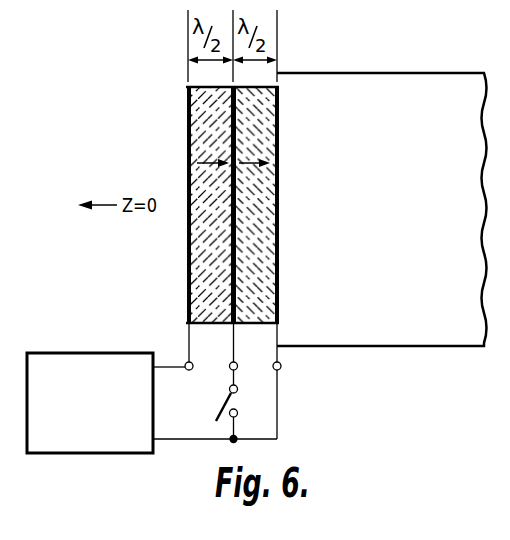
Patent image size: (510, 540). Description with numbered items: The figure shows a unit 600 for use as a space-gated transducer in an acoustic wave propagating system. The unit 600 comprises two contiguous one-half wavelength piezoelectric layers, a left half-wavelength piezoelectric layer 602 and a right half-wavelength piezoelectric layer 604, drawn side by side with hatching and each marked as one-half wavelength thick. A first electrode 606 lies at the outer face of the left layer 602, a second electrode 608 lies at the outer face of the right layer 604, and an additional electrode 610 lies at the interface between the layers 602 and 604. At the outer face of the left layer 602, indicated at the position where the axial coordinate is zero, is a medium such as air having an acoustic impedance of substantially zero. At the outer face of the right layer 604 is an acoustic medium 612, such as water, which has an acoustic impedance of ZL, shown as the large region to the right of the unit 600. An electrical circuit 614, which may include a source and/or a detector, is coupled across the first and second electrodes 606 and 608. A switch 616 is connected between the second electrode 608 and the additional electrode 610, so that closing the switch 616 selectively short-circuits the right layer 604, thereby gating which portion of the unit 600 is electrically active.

The unit 600 is at (289, 109).
The left half-wavelength piezoelectric layer 602 is at (192, 137).
The right half-wavelength piezoelectric layer 604 is at (279, 137).
The first electrode 606 is at (200, 272).
The second electrode 608 is at (281, 303).
The additional electrode 610 is at (237, 279).
The acoustic medium 612 is at (402, 78).
The electrical circuit 614 is at (95, 352).
The switch 616 is at (220, 404).